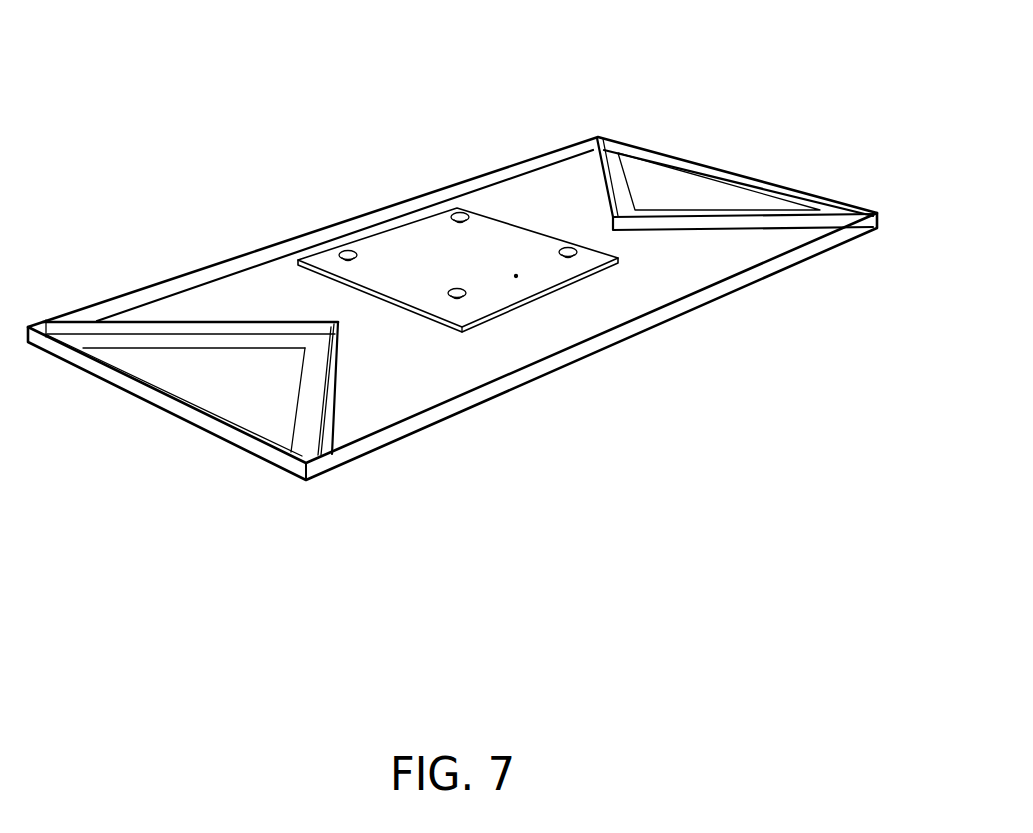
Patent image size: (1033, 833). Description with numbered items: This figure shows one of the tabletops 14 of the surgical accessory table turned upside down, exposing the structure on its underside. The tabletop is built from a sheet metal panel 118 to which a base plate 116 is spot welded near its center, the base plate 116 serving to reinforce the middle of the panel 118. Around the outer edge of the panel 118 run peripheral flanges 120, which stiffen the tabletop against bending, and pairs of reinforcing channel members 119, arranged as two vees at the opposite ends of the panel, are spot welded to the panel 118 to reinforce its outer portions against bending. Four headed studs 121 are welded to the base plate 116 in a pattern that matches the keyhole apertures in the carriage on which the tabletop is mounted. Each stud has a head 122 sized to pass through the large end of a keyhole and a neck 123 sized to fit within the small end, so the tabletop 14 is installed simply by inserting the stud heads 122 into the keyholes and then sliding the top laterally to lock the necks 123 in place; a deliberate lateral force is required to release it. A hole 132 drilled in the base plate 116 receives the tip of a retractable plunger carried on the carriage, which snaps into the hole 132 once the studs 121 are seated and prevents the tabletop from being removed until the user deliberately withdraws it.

The tabletop 14 is at (536, 458).
The base plate 116 is at (513, 230).
The sheet metal panel 118 is at (695, 257).
The reinforcing channel members 119 is at (190, 325).
The peripheral flanges 120 is at (190, 415).
The headed studs 121 is at (457, 215).
The heads 122 is at (348, 251).
The necks 123 is at (358, 257).
The hole 132 is at (516, 276).